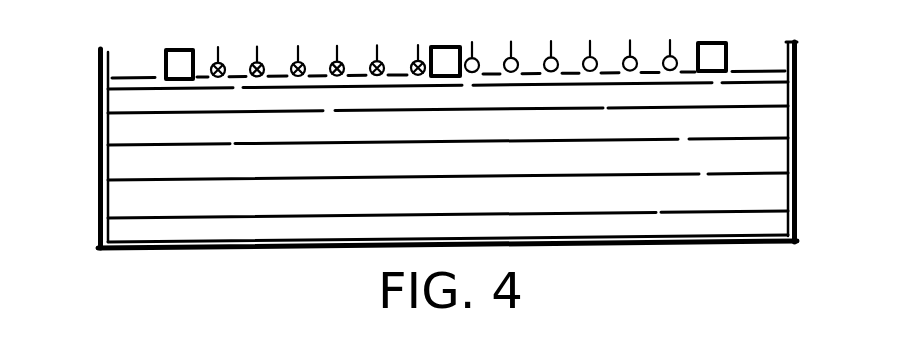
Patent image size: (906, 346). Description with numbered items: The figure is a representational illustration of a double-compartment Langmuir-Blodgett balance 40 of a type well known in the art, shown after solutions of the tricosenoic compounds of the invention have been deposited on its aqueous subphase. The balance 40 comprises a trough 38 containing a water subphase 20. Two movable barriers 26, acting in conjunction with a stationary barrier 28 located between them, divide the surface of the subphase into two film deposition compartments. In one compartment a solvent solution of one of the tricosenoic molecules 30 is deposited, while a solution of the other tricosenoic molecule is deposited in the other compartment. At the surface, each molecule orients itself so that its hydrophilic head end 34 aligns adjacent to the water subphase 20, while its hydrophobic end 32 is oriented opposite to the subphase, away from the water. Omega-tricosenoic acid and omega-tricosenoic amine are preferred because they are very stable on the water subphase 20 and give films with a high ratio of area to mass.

The water subphase 20 is at (633, 197).
The movable barriers 26 is at (177, 49).
The stationary barrier 28 is at (445, 46).
The tricosenoic molecules 30 is at (312, 16).
The hydrophobic end 32 is at (589, 57).
The hydrophilic head end 34 is at (597, 62).
The trough 38 is at (795, 190).
The Langmuir-Blodgett balance 40 is at (97, 190).